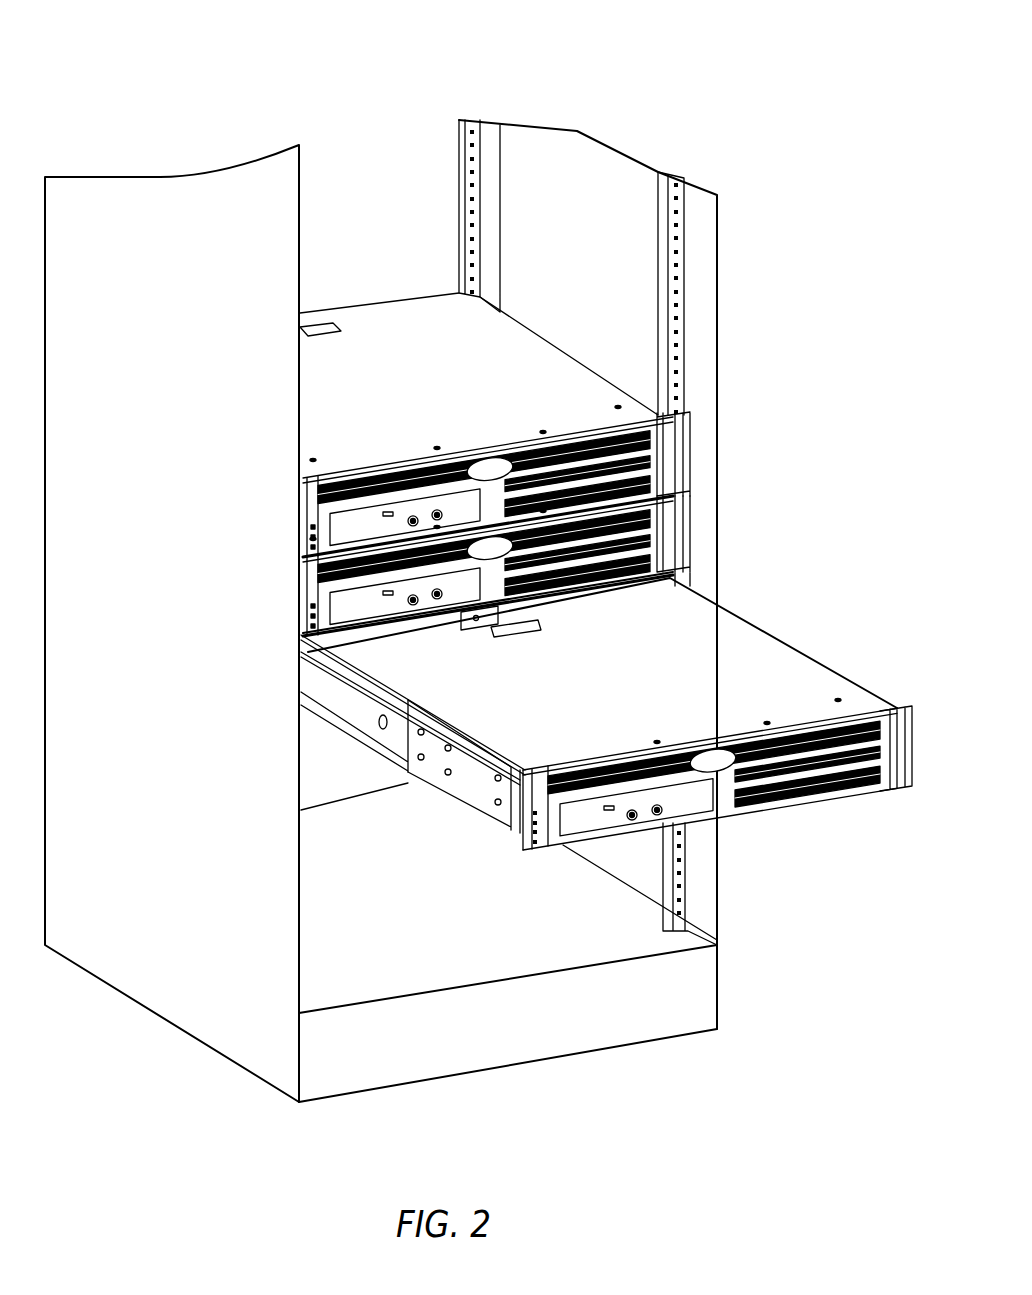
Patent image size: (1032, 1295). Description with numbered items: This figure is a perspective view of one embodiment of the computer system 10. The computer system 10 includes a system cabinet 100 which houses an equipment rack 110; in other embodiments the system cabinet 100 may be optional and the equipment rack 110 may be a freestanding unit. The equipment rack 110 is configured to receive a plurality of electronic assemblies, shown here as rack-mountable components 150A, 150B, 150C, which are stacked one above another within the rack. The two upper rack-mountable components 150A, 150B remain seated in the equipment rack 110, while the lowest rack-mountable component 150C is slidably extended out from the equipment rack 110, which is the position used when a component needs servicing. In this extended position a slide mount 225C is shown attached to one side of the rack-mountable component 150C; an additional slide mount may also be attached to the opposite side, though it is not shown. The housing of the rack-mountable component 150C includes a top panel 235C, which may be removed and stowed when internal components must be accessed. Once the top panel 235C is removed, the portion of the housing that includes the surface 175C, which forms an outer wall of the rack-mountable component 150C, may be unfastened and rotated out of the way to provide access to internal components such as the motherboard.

The computer system 10 is at (230, 62).
The system cabinet 100 is at (127, 175).
The equipment rack 110 is at (473, 132).
The rack-mountable component 150A is at (300, 530).
The rack-mountable component 150B is at (300, 598).
The rack-mountable component 150C is at (887, 780).
The surface 175C is at (572, 833).
The slide mount 225C is at (415, 773).
The top panel 235C is at (767, 680).